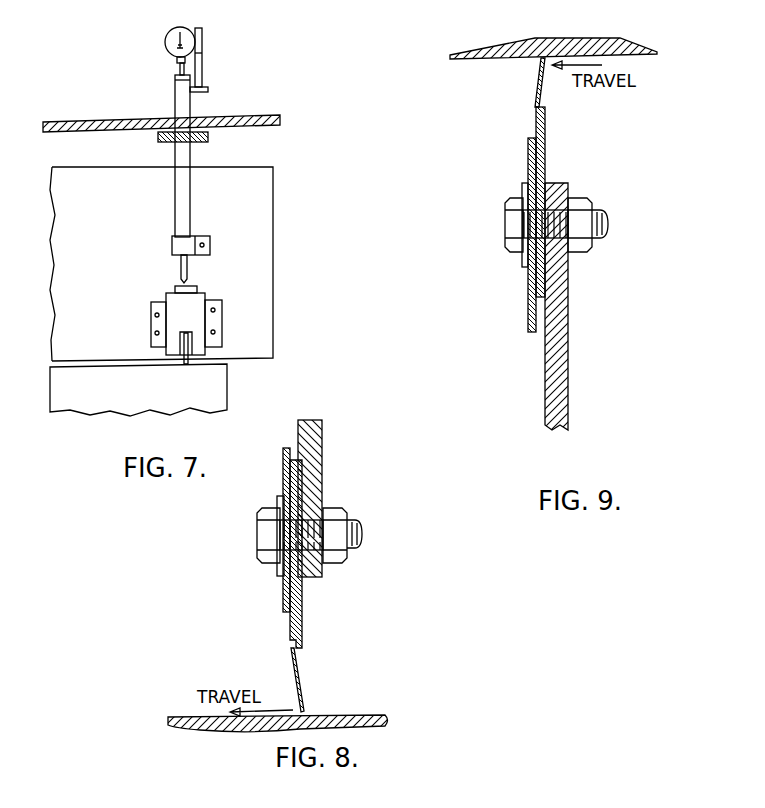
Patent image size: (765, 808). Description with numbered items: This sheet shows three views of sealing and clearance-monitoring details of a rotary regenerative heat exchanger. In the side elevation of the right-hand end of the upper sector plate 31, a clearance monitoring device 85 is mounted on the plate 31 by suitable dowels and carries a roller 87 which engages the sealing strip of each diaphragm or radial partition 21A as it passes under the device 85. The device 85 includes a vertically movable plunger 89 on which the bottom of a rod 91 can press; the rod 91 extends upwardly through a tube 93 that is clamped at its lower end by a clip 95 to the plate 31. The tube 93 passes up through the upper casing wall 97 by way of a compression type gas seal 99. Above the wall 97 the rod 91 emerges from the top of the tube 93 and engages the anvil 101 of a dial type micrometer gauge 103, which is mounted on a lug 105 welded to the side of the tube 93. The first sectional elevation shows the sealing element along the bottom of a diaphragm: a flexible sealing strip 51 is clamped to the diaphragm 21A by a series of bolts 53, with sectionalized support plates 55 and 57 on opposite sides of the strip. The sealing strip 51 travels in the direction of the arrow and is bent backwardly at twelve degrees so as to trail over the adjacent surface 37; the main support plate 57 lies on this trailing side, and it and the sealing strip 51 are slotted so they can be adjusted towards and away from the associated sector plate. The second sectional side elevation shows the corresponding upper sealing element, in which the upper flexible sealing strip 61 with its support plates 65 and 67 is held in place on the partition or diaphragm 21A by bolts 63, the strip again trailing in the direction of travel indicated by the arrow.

In FIG. 7, the dial type micrometer gauge 103 is at (173, 33).
In FIG. 7, the anvil 101 is at (173, 62).
In FIG. 7, the lug 105 is at (203, 97).
In FIG. 7, the tube 93 is at (183, 195).
In FIG. 7, the upper casing wall 97 is at (247, 117).
In FIG. 7, the compression type gas seal 99 is at (207, 138).
In FIG. 7, the upper sector plate 31 is at (263, 250).
In FIG. 7, the clip 95 is at (178, 242).
In FIG. 7, the rod 91 is at (178, 72).
In FIG. 7, the plunger 89 is at (178, 287).
In FIG. 7, the device 85 is at (198, 322).
In FIG. 7, the roller 87 is at (187, 362).
In FIG. 7, the radial partition 21A is at (217, 393).
In FIG. 8, the radial partition 21A is at (315, 475).
In FIG. 9, the radial partition 21A is at (572, 400).
In FIG. 8, the support plate 55 is at (282, 602).
In FIG. 8, the main support plate 57 is at (303, 625).
In FIG. 8, the bolts 53 is at (355, 553).
In FIG. 8, the flexible sealing strip 51 is at (288, 677).
In FIG. 8, the belt 37 is at (330, 713).
In FIG. 9, the support plate 67 is at (543, 128).
In FIG. 9, the support plate 65 is at (527, 163).
In FIG. 9, the upper flexible sealing strip 61 is at (537, 78).
In FIG. 9, the bolts 63 is at (598, 200).